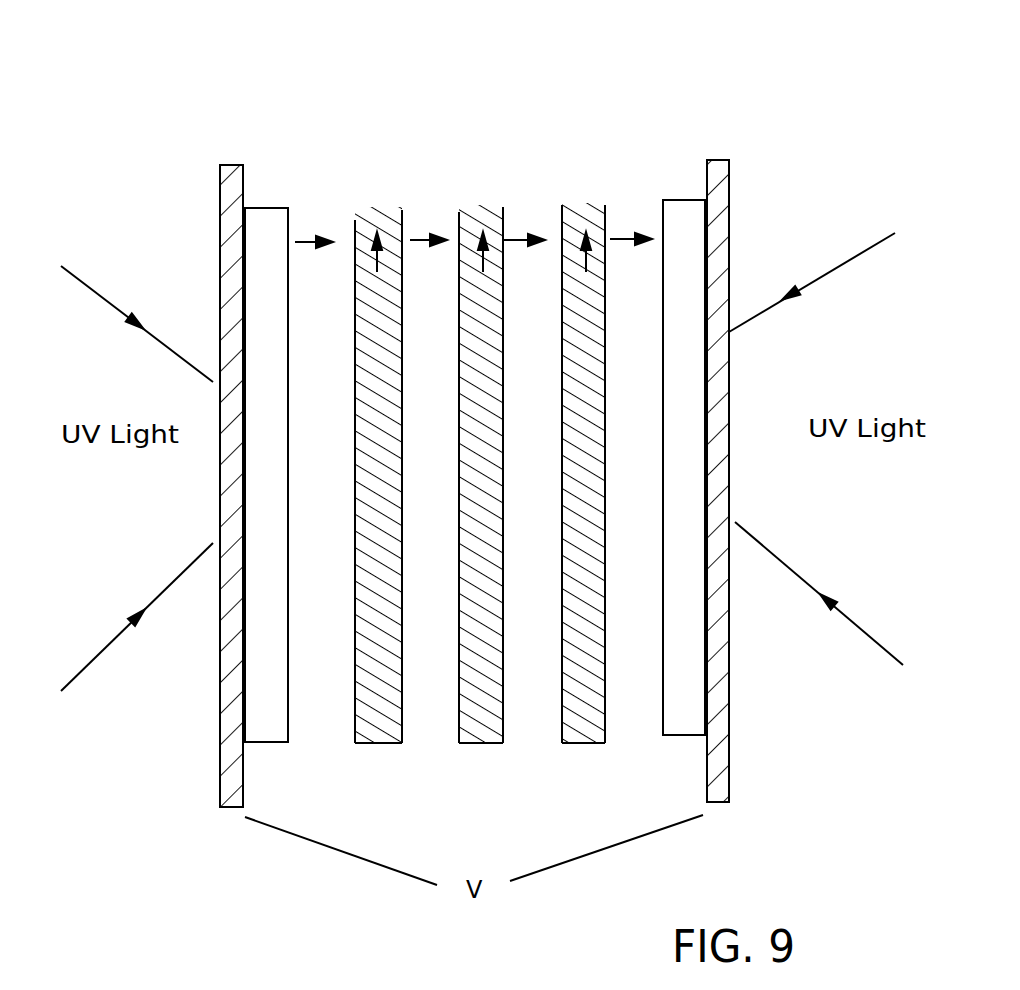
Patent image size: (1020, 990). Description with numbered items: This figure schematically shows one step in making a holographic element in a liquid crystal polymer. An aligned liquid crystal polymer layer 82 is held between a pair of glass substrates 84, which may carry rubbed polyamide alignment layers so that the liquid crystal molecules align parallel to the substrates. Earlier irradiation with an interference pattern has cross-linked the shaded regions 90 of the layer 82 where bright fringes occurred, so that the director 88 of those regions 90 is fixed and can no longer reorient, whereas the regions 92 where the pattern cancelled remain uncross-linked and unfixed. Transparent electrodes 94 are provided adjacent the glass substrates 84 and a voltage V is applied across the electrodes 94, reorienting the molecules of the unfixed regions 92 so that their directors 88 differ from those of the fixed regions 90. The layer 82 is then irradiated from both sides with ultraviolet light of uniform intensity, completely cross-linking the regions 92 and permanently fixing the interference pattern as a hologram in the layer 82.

The liquid crystal polymer layer 82 is at (476, 465).
The glass substrates 84 is at (258, 250).
The director 88 is at (332, 242).
The cross-linked regions 90 is at (478, 233).
The unfixed regions 92 is at (642, 222).
The transparent electrodes 94 is at (215, 767).